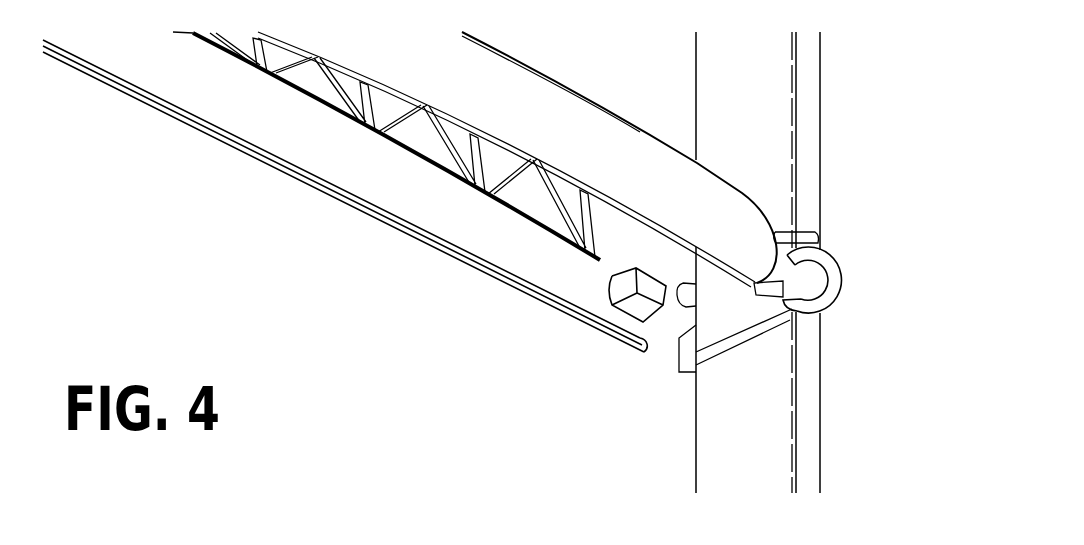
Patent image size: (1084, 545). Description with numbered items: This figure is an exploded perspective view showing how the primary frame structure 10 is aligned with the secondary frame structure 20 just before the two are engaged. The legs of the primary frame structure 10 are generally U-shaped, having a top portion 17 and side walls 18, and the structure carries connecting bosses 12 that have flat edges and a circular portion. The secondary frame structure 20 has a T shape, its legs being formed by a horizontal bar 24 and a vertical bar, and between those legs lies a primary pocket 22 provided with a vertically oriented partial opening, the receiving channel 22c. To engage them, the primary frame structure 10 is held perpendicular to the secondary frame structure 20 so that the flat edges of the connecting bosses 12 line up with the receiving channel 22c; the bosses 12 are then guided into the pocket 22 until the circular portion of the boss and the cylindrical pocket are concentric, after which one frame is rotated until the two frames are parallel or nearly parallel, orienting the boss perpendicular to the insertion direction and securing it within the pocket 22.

The primary frame structure 10 is at (146, 128).
The connecting bosses 12 is at (620, 290).
The top portion 17 is at (374, 130).
The side walls 18 is at (560, 145).
The secondary frame structure 20 is at (833, 415).
The primary pockets 22 is at (845, 280).
The receiving channel 22c is at (680, 322).
The horizontal bar 24 is at (732, 402).